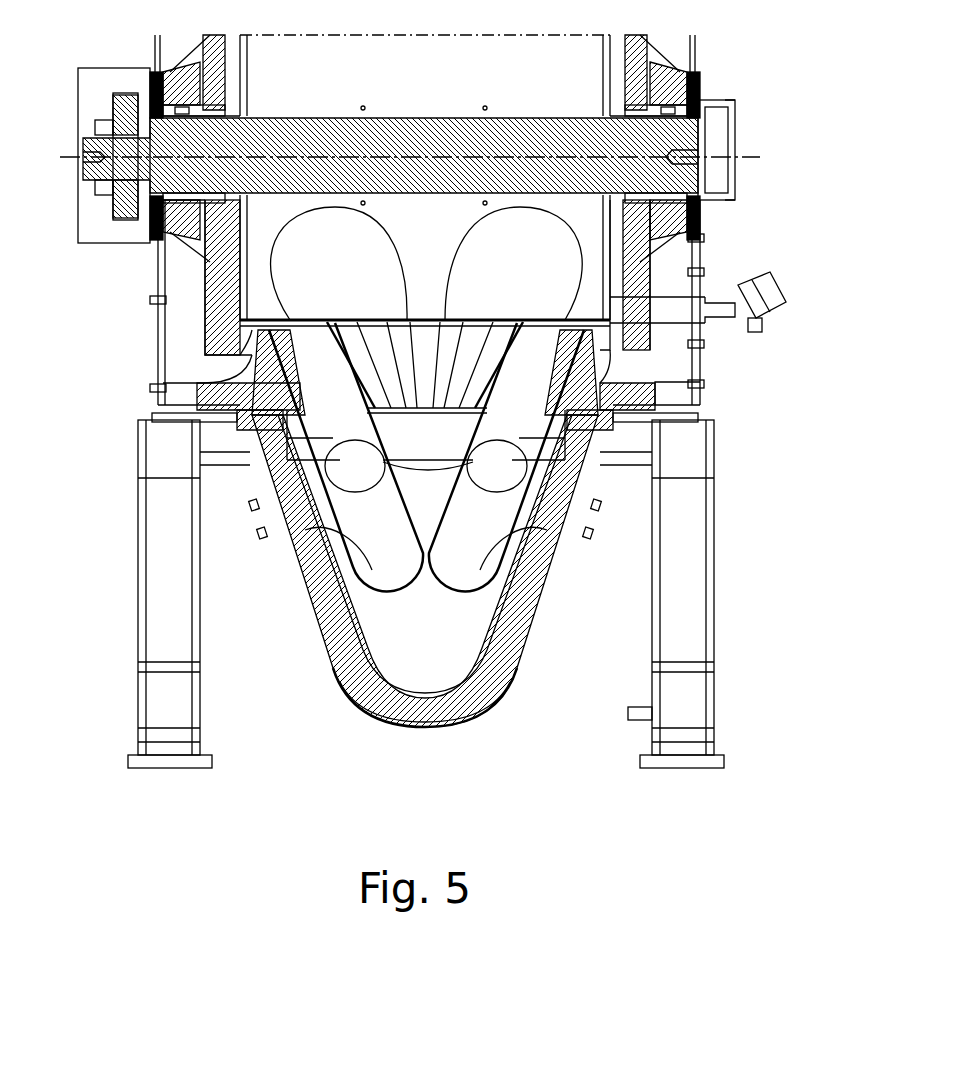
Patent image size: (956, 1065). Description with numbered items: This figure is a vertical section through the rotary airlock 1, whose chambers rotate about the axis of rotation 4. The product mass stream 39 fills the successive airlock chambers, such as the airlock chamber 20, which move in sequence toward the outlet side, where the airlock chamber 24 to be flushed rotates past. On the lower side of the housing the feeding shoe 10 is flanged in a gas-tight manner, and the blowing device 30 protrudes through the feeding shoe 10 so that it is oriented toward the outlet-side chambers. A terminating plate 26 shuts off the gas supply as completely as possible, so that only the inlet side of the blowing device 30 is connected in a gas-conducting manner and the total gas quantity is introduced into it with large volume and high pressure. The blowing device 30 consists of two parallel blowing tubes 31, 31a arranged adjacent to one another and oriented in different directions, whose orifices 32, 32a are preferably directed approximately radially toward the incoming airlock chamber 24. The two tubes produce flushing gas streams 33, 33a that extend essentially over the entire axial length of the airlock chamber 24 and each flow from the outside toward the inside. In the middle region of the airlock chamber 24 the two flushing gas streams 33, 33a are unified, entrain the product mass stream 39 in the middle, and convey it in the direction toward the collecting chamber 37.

The rotary airlock 1 is at (792, 118).
The axis of rotation 4 is at (672, 138).
The feeding shoe 10 is at (636, 610).
The airlock chamber 20 is at (692, 97).
The airlock chamber 24 is at (685, 237).
The terminating plate 26 is at (437, 657).
The blowing device 30 is at (365, 698).
The blowing tube 31 is at (318, 592).
The blowing tube 31a is at (537, 596).
The orifice 32 is at (370, 532).
The orifice 32a is at (545, 530).
The flushing gas stream 33 is at (265, 268).
The flushing gas stream 33a is at (698, 332).
The collecting chamber 37 is at (468, 308).
The product mass stream 39 is at (402, 680).